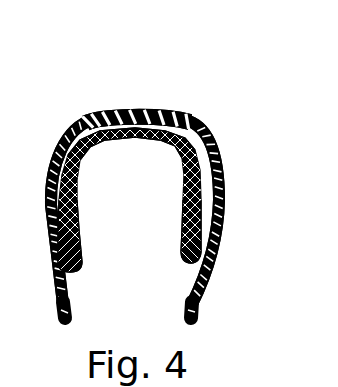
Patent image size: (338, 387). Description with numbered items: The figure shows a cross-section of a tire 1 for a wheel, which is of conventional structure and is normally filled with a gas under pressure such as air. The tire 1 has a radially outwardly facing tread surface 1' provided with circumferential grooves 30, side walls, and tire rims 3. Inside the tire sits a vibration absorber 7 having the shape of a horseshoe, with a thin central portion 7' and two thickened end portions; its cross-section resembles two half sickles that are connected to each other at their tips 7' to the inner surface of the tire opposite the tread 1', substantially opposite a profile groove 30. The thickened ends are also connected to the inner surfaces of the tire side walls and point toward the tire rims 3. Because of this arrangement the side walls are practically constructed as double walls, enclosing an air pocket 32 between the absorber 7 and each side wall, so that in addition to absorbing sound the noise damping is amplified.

The tire 1 is at (136, 184).
The tread surface 1' is at (138, 87).
The circumferential groove 30 is at (112, 111).
The air pocket 32 is at (72, 158).
The vibration absorber 7 is at (160, 204).
The thin central portion 7' is at (131, 144).
The tire rim 3 is at (60, 312).